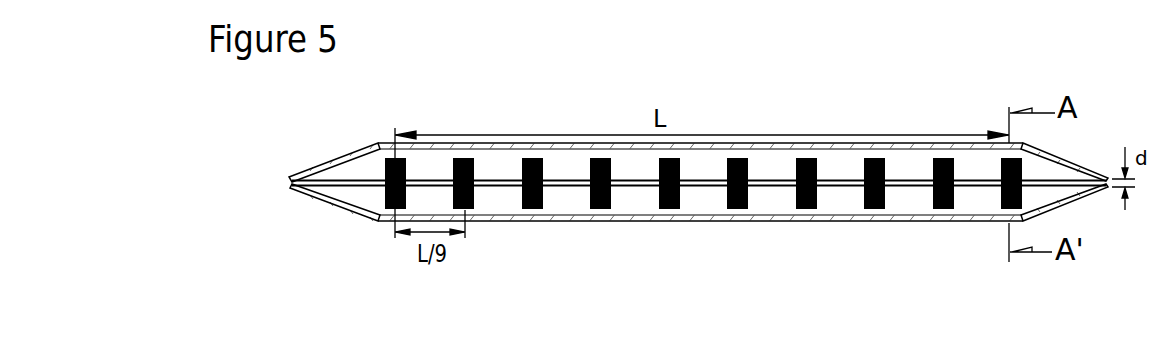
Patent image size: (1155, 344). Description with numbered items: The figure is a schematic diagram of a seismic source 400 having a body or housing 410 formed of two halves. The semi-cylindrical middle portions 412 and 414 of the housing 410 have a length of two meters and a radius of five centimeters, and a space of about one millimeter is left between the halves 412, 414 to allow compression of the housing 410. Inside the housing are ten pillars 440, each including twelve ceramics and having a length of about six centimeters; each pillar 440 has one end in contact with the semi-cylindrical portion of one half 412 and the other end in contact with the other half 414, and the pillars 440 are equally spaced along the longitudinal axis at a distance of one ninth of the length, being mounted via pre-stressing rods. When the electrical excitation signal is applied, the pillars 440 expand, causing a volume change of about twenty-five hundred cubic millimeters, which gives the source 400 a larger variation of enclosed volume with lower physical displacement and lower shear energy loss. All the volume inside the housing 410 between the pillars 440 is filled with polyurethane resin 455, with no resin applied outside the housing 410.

The seismic source 400 is at (907, 114).
The housing 410 is at (357, 152).
The semi-cylindrical middle portion 412 is at (728, 143).
The semi-cylindrical middle portion 414 is at (811, 221).
The pillar 440 is at (385, 208).
The polyurethane resin 455 is at (437, 168).